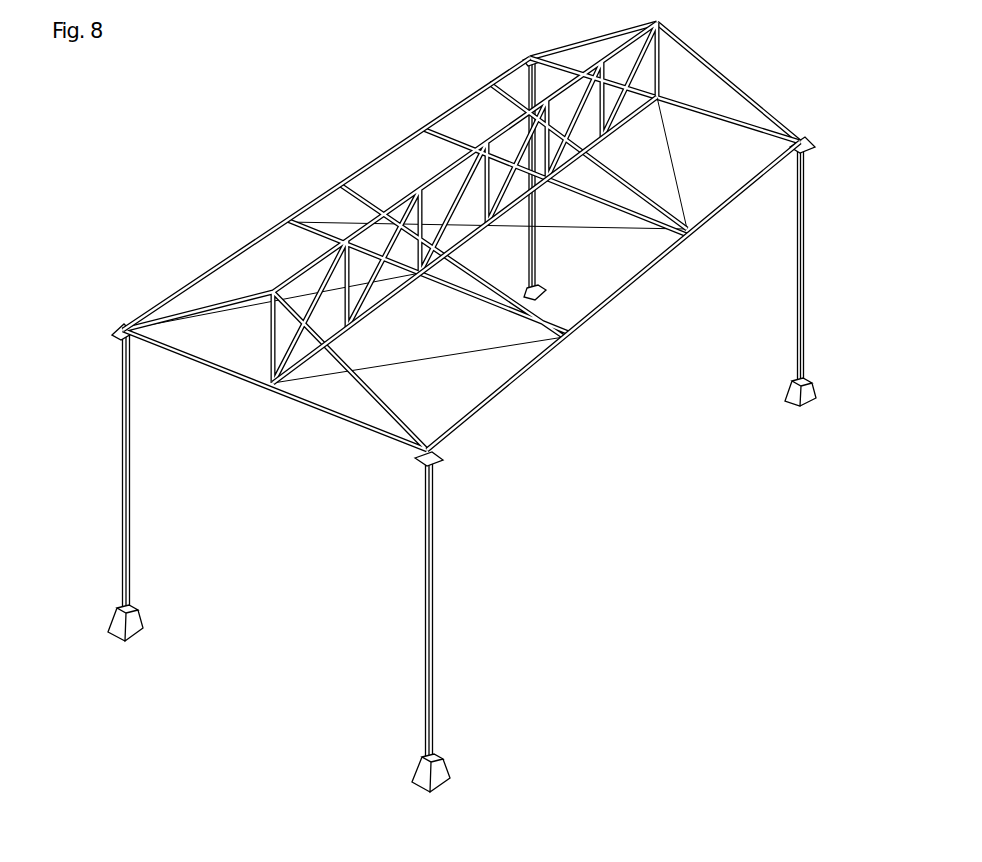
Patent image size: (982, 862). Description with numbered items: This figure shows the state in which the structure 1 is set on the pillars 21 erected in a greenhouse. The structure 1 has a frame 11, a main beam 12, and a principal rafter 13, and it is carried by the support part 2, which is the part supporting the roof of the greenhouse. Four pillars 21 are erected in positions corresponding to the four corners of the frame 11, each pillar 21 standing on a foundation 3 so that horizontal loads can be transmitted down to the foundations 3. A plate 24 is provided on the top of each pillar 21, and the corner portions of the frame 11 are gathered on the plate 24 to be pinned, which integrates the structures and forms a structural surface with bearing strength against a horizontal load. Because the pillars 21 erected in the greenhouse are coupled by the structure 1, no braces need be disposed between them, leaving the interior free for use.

The structure 1 is at (461, 236).
The support part 2 is at (453, 403).
The foundations 3 is at (140, 604).
The frame 11 is at (352, 175).
The main beam 12 is at (380, 310).
The principal rafter 13 is at (712, 68).
The pillars 21 is at (130, 455).
The plate 24 is at (119, 327).